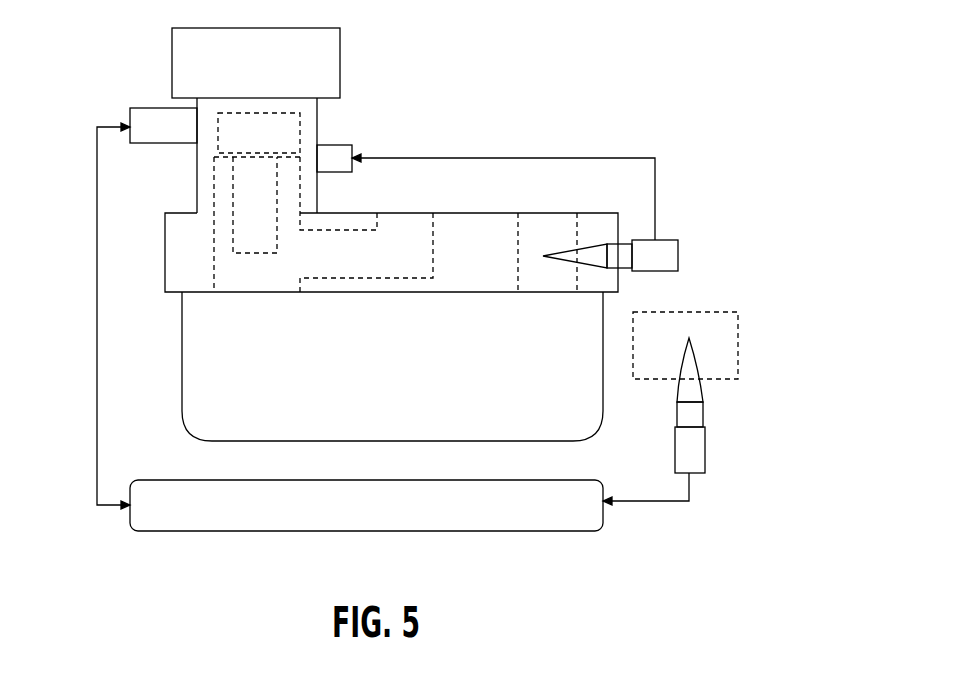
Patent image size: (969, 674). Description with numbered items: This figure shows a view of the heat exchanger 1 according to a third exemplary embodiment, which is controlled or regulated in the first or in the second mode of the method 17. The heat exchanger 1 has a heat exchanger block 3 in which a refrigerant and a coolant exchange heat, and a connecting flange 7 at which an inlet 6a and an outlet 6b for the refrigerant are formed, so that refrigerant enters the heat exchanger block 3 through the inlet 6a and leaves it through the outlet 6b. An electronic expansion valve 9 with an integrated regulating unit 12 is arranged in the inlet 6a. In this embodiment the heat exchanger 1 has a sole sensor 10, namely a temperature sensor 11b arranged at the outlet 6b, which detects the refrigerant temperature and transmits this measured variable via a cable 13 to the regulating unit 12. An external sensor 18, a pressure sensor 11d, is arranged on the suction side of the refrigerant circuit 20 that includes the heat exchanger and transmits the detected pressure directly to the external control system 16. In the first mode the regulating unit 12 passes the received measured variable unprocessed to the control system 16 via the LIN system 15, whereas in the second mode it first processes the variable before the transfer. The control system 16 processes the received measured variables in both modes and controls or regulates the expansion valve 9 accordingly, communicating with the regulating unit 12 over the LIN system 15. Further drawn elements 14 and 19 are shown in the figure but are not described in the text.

The heat exchanger 1 is at (673, 178).
The heat exchanger block 3 is at (607, 415).
The inlet 6a is at (347, 262).
The outlet 6b is at (546, 273).
The connecting flange 7 is at (182, 257).
The electronic expansion valve 9 is at (320, 59).
The sensor 10 is at (662, 255).
The temperature sensor 11b is at (575, 256).
The pressure sensor 11d is at (690, 370).
The regulating unit 12 is at (300, 120).
The cable 13 is at (458, 158).
The inlet connection 14 is at (338, 152).
The LIN system 15 is at (97, 370).
The control system 16 is at (565, 513).
The method 17 is at (627, 49).
The external sensor 18 is at (690, 452).
The valve 19 is at (153, 110).
The refrigerant circuit 20 is at (738, 346).